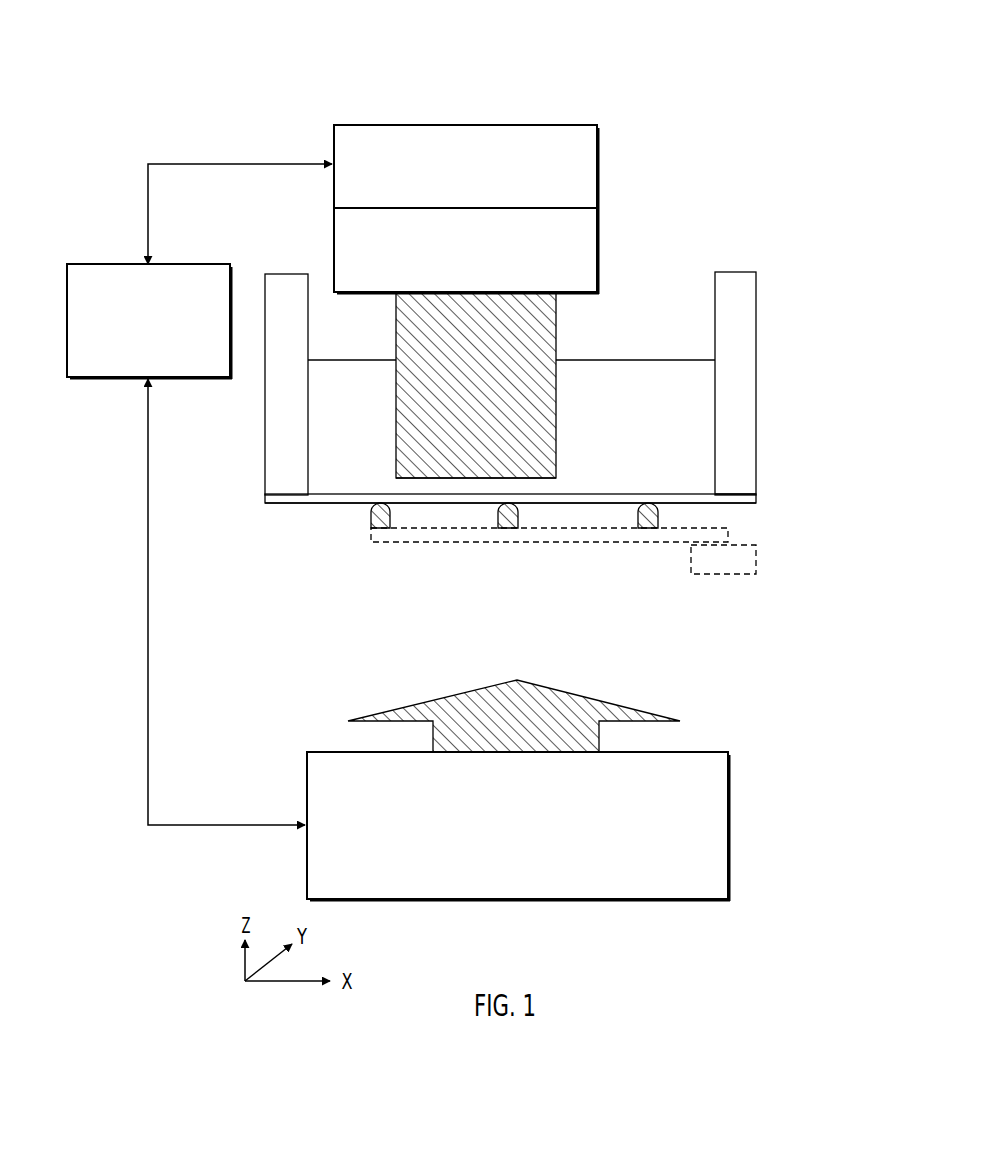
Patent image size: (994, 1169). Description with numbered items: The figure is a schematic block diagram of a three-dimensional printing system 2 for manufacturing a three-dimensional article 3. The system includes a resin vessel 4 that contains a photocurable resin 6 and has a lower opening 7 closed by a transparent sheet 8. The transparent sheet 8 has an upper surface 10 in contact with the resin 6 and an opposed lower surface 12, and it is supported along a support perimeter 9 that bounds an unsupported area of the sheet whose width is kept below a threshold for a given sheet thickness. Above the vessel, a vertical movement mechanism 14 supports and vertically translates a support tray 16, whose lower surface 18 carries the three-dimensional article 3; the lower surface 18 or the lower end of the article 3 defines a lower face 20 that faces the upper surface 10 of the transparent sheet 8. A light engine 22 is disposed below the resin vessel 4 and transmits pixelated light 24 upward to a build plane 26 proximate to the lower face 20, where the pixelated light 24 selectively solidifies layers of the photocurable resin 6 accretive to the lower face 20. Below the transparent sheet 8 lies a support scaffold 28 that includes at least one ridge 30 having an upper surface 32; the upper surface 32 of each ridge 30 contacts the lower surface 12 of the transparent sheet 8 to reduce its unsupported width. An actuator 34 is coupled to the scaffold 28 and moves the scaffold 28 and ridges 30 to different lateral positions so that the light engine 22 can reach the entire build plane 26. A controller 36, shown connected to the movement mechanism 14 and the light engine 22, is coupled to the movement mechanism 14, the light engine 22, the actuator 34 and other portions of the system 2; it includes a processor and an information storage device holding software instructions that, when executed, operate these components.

The three-dimensional printing system 2 is at (686, 84).
The three-dimensional article 3 is at (398, 340).
The resin vessel 4 is at (740, 286).
The photocurable resin 6 is at (655, 383).
The lower opening 7 is at (283, 496).
The transparent sheet 8 is at (300, 505).
The support perimeter 9 is at (742, 503).
The upper surface 10 is at (348, 497).
The lower surface 12 is at (343, 505).
The vertical movement mechanism 14 is at (597, 180).
The support tray 16 is at (597, 268).
The lower surface 18 is at (582, 293).
The lower face 20 is at (480, 478).
The light engine 22 is at (730, 808).
The pixelated light 24 is at (570, 706).
The build plane 26 is at (437, 488).
The support scaffold 28 is at (588, 537).
The ridge 30 is at (382, 530).
The upper surface 32 is at (382, 505).
The actuator 34 is at (727, 565).
The controller 36 is at (120, 380).